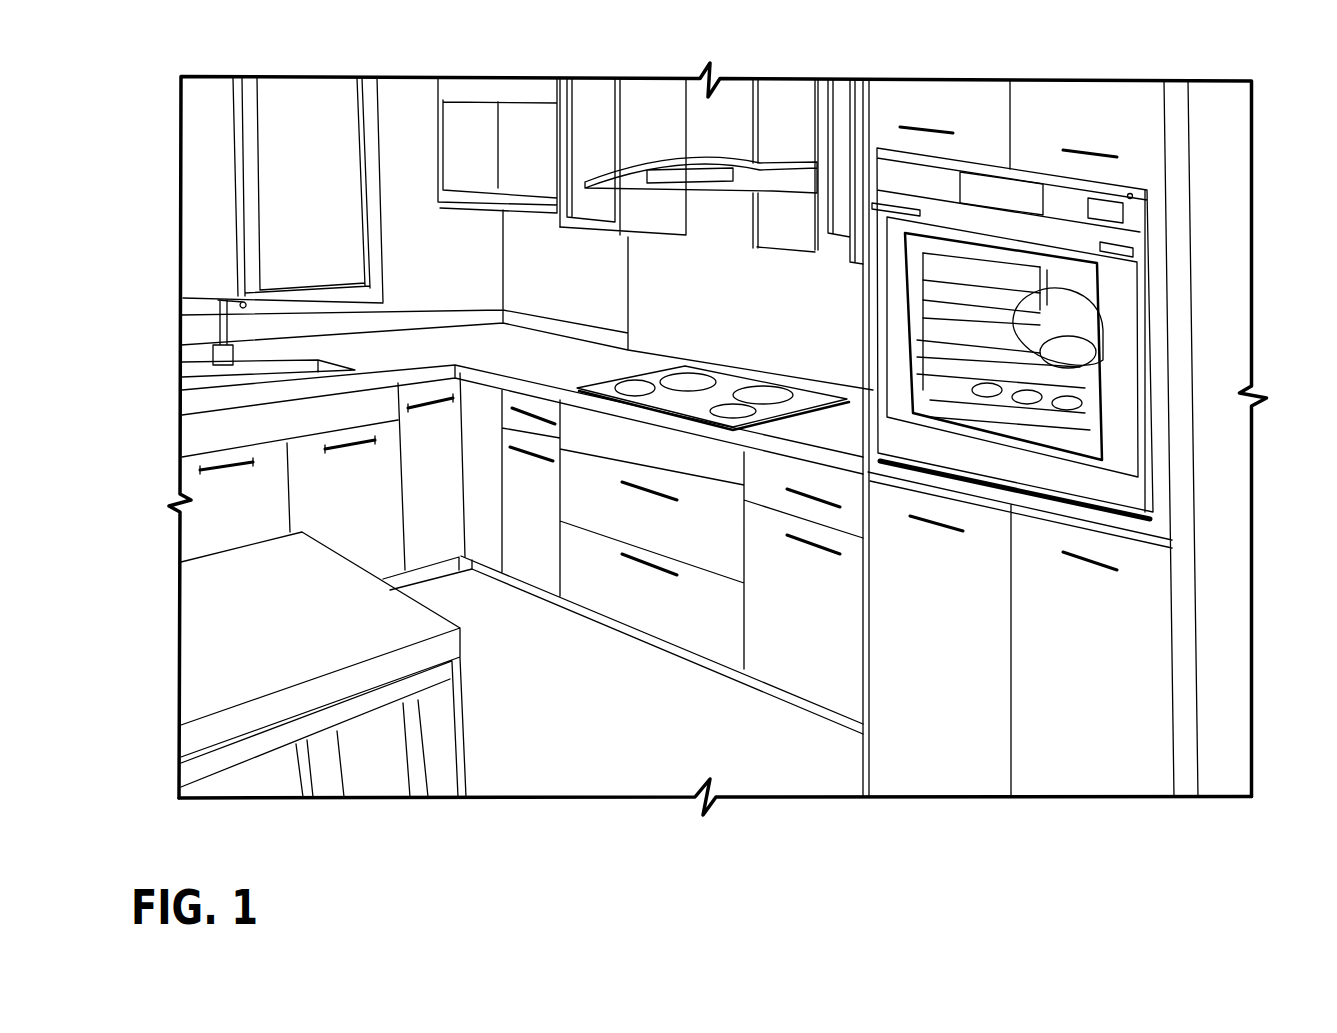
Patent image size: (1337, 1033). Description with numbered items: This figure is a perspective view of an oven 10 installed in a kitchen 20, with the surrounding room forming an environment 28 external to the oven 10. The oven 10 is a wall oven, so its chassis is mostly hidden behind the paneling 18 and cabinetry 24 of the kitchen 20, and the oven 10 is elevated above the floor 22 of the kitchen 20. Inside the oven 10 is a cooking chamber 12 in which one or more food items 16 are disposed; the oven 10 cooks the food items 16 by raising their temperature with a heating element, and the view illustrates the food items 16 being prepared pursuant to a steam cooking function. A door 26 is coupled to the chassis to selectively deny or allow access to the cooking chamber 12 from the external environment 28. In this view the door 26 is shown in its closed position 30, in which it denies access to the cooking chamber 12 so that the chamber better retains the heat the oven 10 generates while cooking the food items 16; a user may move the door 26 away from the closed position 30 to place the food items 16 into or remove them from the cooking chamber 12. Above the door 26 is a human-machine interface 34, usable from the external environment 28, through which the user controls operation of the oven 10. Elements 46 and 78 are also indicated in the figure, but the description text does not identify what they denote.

The oven 10 is at (1161, 349).
The cooking chamber 12 is at (1085, 286).
The food items 16 is at (1067, 407).
The paneling 18 is at (1173, 208).
The kitchen 20 is at (209, 155).
The floor 22 is at (691, 756).
The cabinetry 24 is at (1075, 107).
The door 26 is at (880, 283).
The external environment 28 is at (332, 143).
The closed position 30 is at (870, 323).
The human-machine interface 34 is at (958, 192).
The button 46 is at (1078, 195).
The camera 78 is at (1136, 187).